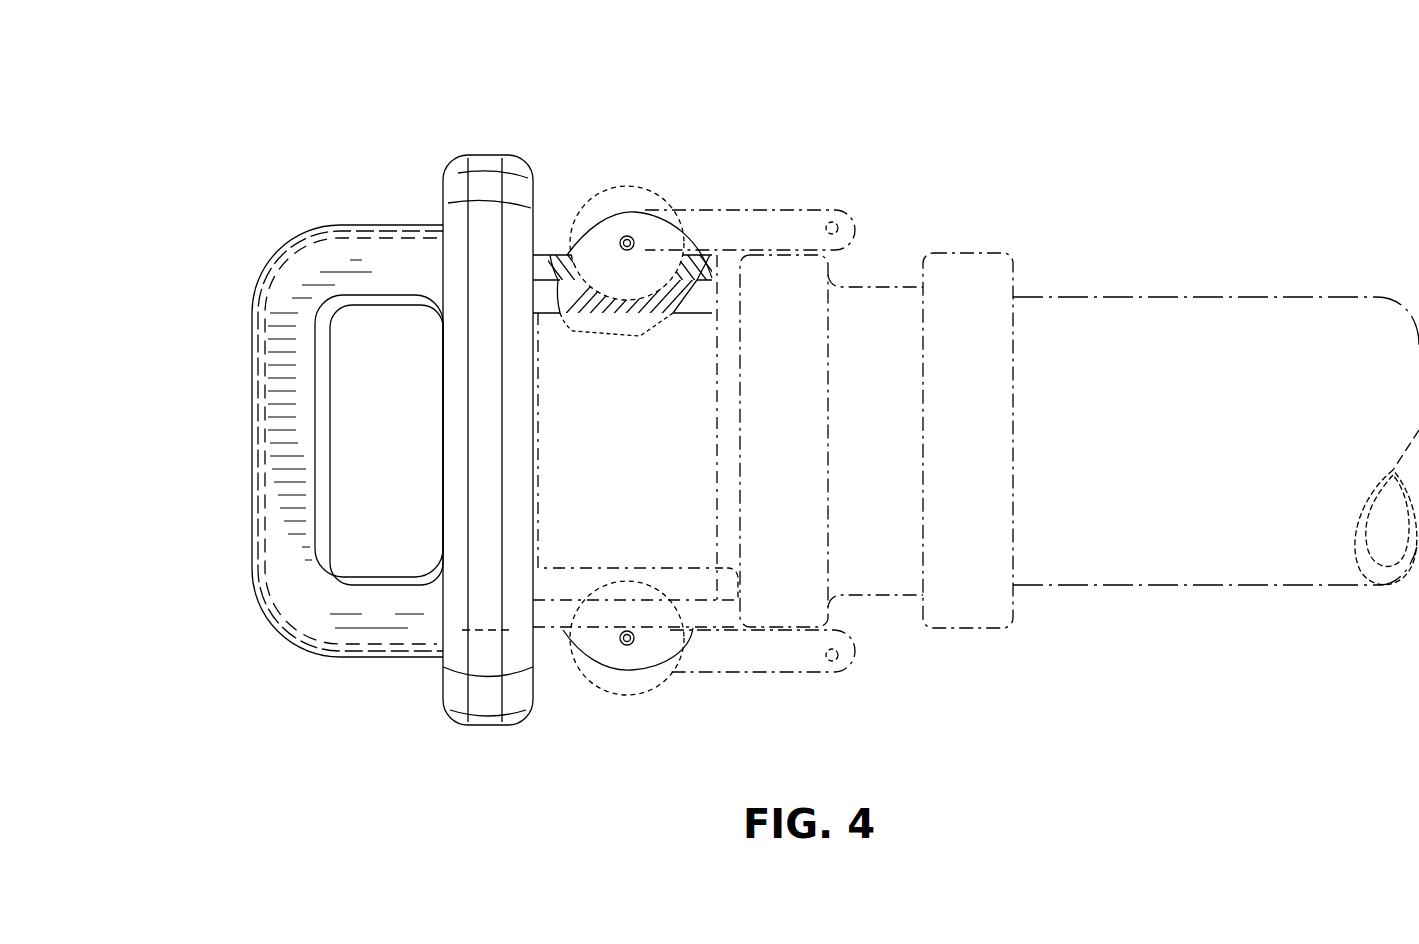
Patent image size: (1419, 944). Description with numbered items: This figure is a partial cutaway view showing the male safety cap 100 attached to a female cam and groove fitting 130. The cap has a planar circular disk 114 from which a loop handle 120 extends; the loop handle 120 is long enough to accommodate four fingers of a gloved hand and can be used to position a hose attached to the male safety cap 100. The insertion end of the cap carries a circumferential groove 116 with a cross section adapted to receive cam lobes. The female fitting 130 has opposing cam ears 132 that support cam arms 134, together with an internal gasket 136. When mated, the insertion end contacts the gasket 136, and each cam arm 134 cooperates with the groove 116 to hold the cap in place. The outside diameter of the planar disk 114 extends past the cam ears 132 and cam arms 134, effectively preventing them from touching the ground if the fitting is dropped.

The male safety cap 100 is at (218, 110).
The planar circular disk 114 is at (485, 708).
The circumferential groove 116 is at (588, 290).
The loop handle 120 is at (277, 460).
The female cam and groove fitting 130 is at (790, 122).
The cam ears 132 is at (590, 225).
The cam arms 134 is at (767, 208).
The internal gasket 136 is at (727, 303).